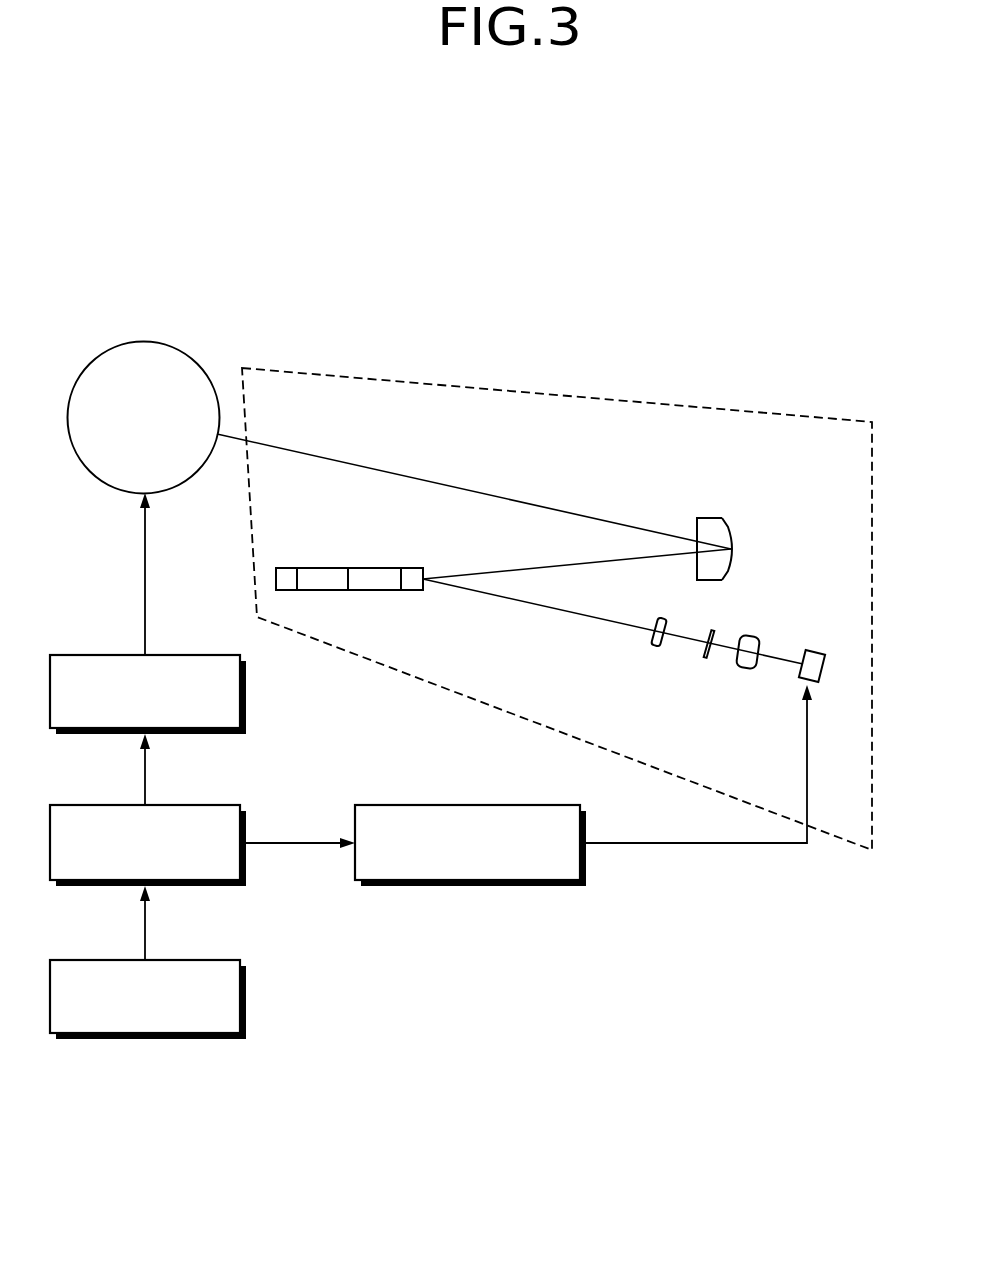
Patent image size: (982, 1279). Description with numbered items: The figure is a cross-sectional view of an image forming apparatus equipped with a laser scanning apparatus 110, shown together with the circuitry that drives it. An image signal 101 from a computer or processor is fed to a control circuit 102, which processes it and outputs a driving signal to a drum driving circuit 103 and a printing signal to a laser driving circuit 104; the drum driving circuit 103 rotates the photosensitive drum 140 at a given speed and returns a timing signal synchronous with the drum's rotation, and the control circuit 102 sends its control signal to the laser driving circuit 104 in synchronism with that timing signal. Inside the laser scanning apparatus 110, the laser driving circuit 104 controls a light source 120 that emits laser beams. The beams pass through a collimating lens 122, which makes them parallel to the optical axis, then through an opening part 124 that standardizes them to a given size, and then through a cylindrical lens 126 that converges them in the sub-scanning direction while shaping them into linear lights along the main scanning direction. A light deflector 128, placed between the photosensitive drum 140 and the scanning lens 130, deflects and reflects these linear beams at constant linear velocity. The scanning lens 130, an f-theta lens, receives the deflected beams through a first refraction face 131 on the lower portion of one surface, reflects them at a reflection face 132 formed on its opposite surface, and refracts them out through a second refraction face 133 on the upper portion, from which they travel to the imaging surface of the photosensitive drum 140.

The image signal 101 is at (148, 1040).
The control circuit 102 is at (200, 886).
The drum driving circuit 103 is at (246, 693).
The laser driving circuit 104 is at (485, 887).
The laser scanning apparatus 110 is at (787, 414).
The light source 120 is at (797, 673).
The collimating lens 122 is at (740, 668).
The opening part 124 is at (706, 658).
The cylindrical lens 126 is at (654, 646).
The light deflector 128 is at (356, 548).
The scanning lens 130 is at (676, 561).
The first refraction face 131 is at (697, 571).
The reflection face 132 is at (735, 560).
The second refraction face 133 is at (697, 523).
The photosensitive drum 140 is at (142, 342).